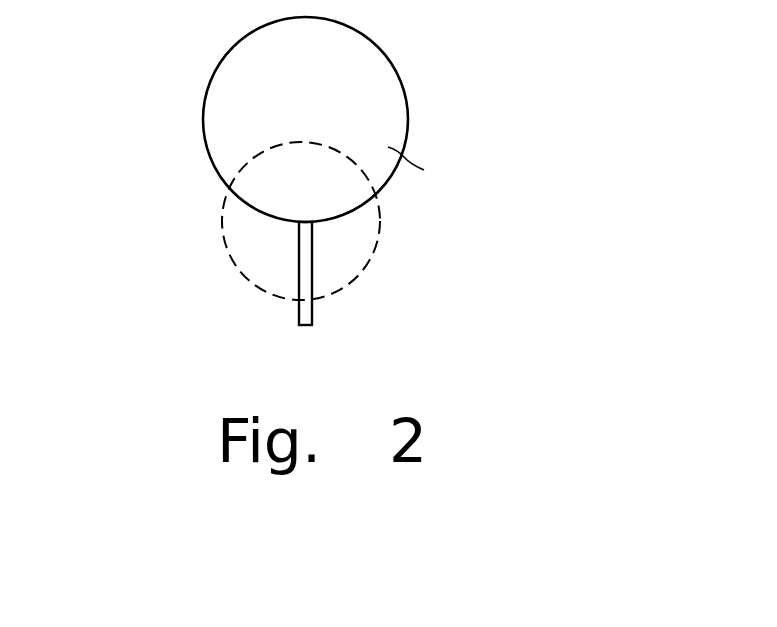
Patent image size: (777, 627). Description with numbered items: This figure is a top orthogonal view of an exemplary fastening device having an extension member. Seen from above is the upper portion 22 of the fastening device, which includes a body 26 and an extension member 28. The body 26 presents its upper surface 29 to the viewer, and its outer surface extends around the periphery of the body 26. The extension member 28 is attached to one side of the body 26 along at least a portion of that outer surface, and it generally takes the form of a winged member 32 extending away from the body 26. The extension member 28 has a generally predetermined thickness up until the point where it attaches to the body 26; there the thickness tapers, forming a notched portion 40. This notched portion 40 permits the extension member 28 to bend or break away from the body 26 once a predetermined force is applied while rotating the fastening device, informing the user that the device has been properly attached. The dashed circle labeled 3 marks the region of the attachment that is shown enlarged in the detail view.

The upper portion 22 is at (253, 189).
The body 26 is at (408, 93).
The upper surface 29 is at (423, 165).
The extension member 28 is at (232, 291).
The winged member 32 is at (299, 265).
The notched portion 40 is at (312, 223).
The detail region shown in Fig. 3 is at (358, 278).